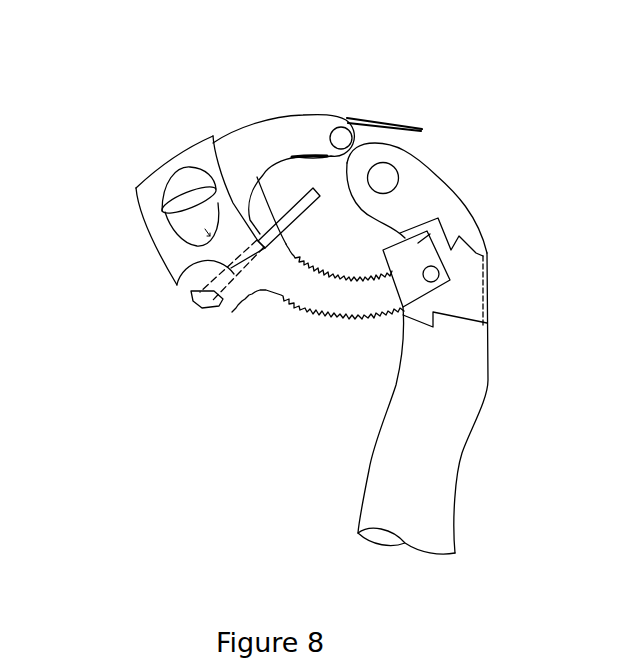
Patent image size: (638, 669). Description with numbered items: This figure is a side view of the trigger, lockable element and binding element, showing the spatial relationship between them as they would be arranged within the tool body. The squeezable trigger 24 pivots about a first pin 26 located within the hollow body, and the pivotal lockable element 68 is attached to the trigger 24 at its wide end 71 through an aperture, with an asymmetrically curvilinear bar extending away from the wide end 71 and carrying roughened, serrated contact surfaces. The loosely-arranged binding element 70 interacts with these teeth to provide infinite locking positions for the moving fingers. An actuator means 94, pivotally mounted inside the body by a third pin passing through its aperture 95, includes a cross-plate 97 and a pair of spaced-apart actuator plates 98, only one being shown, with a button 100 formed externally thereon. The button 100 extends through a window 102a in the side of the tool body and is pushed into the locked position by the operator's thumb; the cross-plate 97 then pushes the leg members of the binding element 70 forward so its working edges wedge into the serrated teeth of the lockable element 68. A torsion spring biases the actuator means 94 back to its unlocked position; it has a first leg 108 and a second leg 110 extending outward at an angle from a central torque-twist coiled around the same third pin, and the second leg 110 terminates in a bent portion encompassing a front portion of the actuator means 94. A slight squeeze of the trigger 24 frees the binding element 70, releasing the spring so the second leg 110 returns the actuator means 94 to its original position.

The actuator means 94 is at (137, 82).
The window 102a is at (150, 182).
The actuator plate 98 is at (180, 182).
The button 100 is at (173, 208).
The cross-plate 97 is at (192, 313).
The binding element 70 is at (257, 177).
The second leg 110 is at (315, 152).
The aperture 95 is at (345, 138).
The first leg 108 is at (405, 125).
The first pin 26 is at (385, 178).
The wide end 71 is at (447, 238).
The trigger 24 is at (462, 357).
The lockable element 68 is at (360, 298).